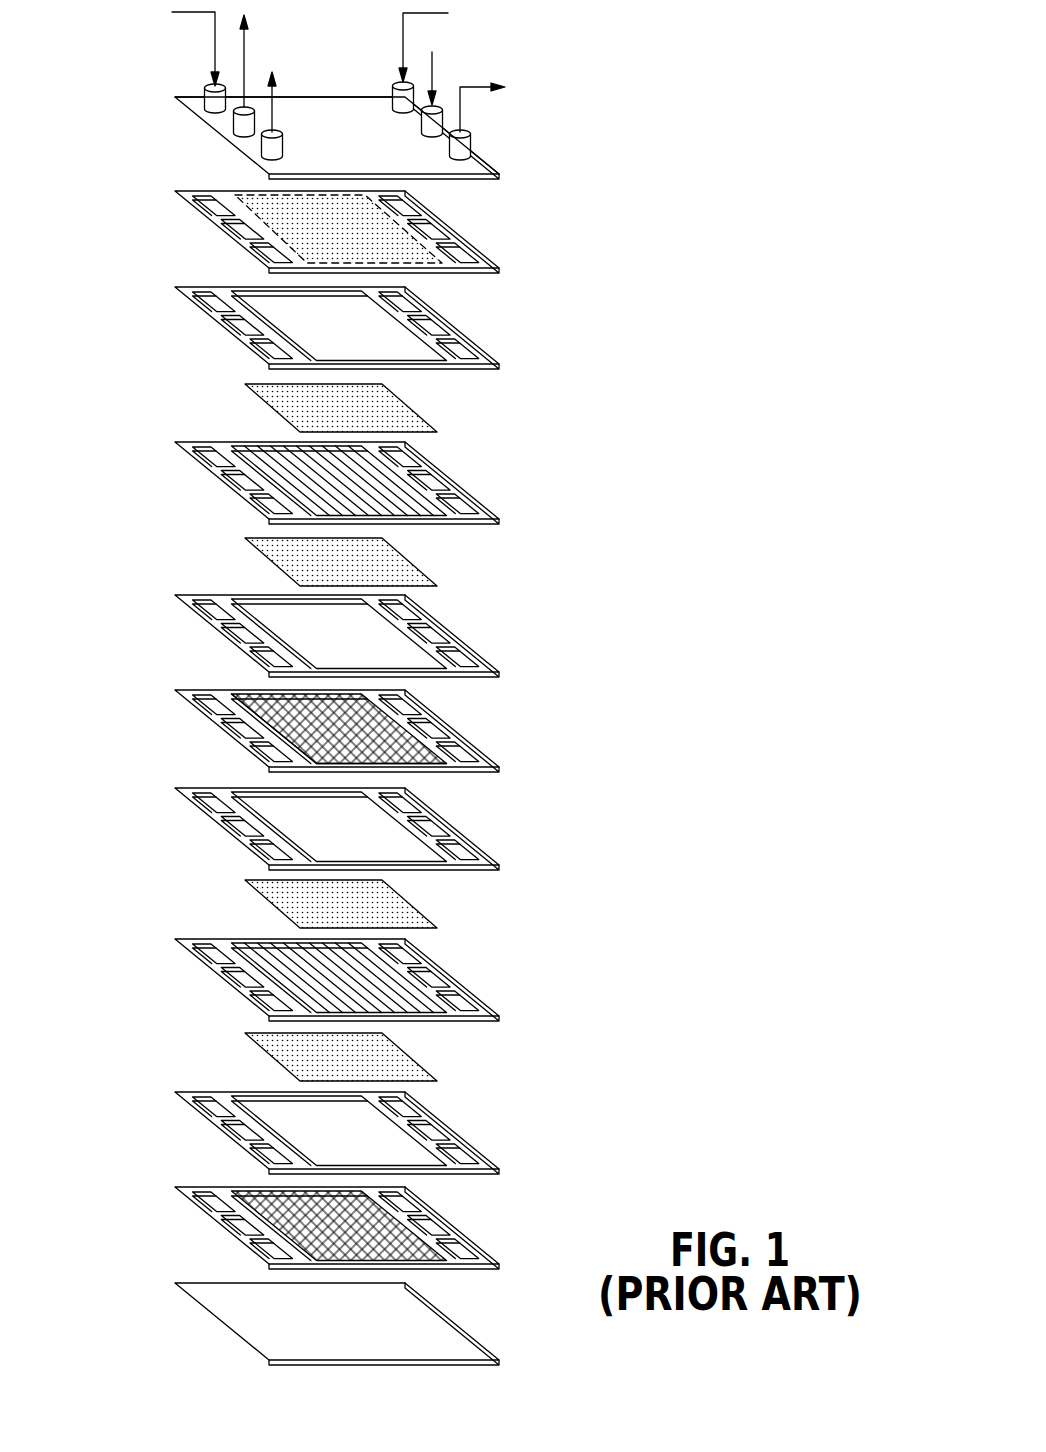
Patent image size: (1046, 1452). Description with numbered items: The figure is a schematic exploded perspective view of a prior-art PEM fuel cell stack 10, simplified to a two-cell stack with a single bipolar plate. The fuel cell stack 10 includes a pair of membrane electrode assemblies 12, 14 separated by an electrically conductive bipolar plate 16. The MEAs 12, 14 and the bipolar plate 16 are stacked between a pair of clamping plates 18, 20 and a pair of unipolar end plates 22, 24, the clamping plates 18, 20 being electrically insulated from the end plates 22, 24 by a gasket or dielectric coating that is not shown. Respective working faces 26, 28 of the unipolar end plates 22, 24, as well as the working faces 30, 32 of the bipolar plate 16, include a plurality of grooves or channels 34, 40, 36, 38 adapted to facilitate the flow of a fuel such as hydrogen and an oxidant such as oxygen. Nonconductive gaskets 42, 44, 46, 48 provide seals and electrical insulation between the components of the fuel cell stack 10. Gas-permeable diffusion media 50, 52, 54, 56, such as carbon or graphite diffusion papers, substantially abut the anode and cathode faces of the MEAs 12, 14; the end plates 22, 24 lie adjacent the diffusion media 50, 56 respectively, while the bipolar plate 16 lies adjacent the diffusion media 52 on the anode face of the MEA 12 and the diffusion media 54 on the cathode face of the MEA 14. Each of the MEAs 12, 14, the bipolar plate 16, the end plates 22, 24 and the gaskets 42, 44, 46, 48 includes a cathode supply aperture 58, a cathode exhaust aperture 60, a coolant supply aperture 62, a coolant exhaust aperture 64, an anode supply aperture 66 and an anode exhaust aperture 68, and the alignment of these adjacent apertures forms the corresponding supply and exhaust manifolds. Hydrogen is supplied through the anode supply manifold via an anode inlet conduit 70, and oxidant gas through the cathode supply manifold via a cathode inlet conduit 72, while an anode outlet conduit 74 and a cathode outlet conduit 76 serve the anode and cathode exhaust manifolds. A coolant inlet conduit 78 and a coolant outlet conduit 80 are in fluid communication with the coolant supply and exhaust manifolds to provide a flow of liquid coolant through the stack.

The PEM fuel cell stack 10 is at (620, 435).
The membrane electrode assembly 12 is at (208, 481).
The membrane electrode assembly 14 is at (453, 973).
The bipolar plate 16 is at (339, 727).
The clamping plate 18 is at (339, 93).
The clamping plate 20 is at (468, 1330).
The unipolar end plate 22 is at (339, 239).
The unipolar end plate 24 is at (339, 1215).
The working face 26 is at (423, 270).
The working face 28 is at (243, 1193).
The working face 30 is at (339, 745).
The working face 32 is at (307, 760).
The channels 34 is at (235, 237).
The channels 36 is at (405, 706).
The channels 38 is at (270, 757).
The channels 40 is at (413, 1247).
The nonconductive gasket 42 is at (228, 300).
The nonconductive gasket 44 is at (238, 630).
The nonconductive gasket 46 is at (433, 842).
The nonconductive gasket 48 is at (413, 1138).
The gas-permeable diffusion media 50 is at (280, 407).
The gas-permeable diffusion media 52 is at (277, 562).
The gas-permeable diffusion media 54 is at (397, 903).
The gas-permeable diffusion media 56 is at (400, 1057).
The cathode supply aperture 58 is at (203, 700).
The cathode exhaust aperture 60 is at (455, 758).
The coolant supply aperture 62 is at (435, 733).
The coolant exhaust aperture 64 is at (237, 725).
The anode supply aperture 66 is at (393, 717).
The anode exhaust aperture 68 is at (283, 742).
The anode inlet conduit 70 is at (398, 100).
The cathode inlet conduit 72 is at (210, 95).
The anode outlet conduit 74 is at (270, 142).
The cathode outlet conduit 76 is at (457, 147).
The coolant inlet conduit 78 is at (430, 125).
The coolant outlet conduit 80 is at (240, 125).